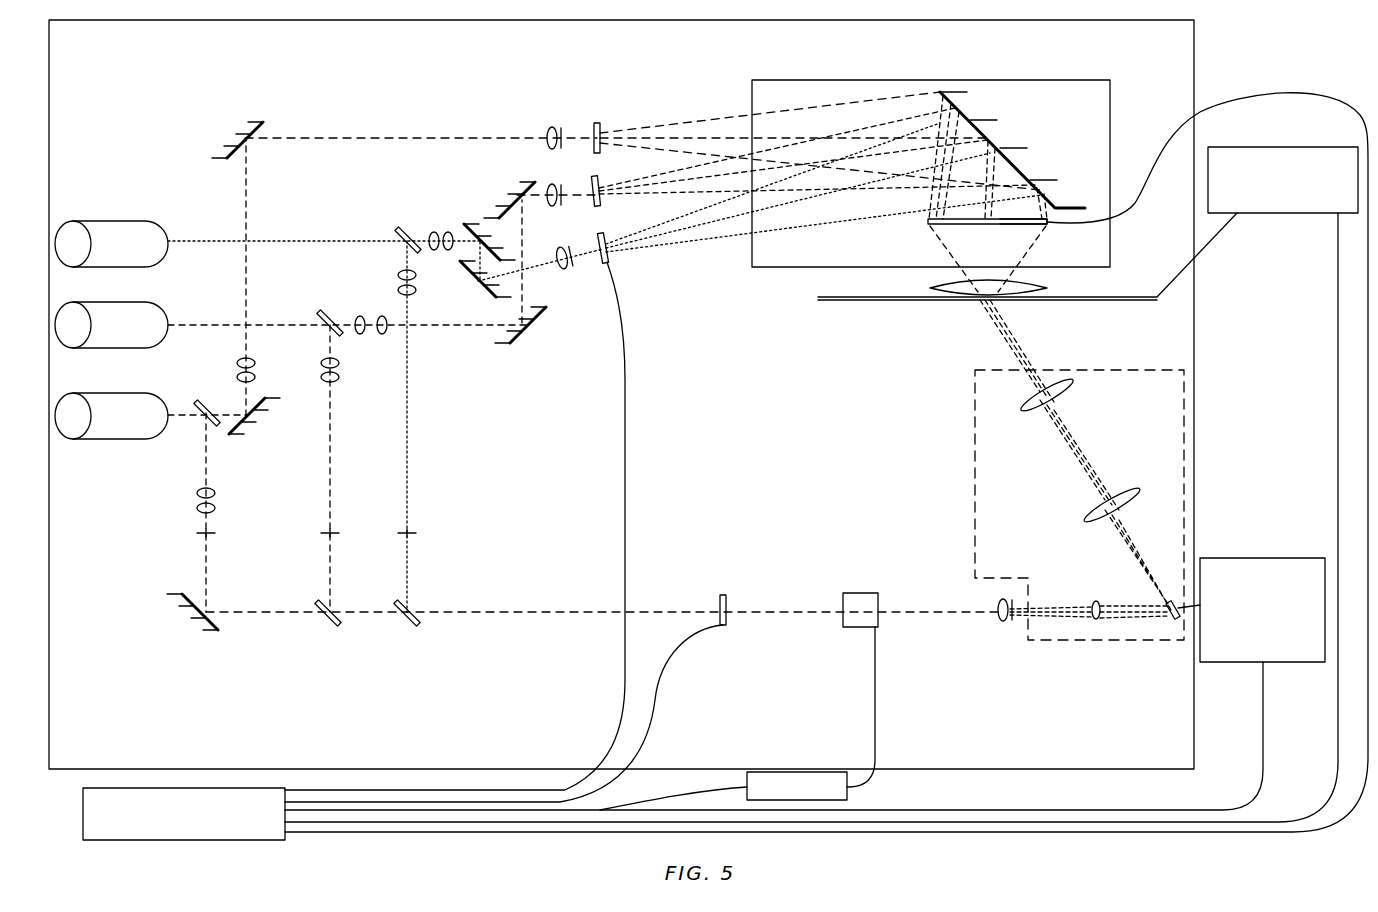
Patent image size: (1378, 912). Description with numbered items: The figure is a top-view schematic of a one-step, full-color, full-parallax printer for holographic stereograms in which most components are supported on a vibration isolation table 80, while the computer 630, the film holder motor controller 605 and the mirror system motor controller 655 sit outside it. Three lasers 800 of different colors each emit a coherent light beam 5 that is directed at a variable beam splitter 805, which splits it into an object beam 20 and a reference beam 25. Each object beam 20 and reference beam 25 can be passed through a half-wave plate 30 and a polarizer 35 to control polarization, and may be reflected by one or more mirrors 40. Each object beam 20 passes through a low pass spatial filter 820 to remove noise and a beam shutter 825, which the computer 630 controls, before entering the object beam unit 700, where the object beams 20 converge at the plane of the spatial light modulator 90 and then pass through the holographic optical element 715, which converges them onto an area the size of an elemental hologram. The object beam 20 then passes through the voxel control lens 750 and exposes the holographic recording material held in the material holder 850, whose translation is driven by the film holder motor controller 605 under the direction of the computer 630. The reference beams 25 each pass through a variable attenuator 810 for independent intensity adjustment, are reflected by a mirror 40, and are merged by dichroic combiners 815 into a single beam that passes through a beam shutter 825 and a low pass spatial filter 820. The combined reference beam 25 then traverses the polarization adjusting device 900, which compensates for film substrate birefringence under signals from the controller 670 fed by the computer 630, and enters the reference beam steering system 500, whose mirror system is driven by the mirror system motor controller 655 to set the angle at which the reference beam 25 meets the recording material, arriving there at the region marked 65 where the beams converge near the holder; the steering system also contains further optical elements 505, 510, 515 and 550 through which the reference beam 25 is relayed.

The coherent light beam 5 is at (226, 250).
The object beam 20 is at (410, 133).
The reference beam 25 is at (575, 618).
The half-wave plate 30 is at (430, 228).
The polarizer 35 is at (447, 228).
The mirror 40 is at (238, 128).
The focal point on sample 65 is at (975, 305).
The vibration isolation table 80 is at (1198, 58).
The spatial light modulator 90 is at (1052, 228).
The reference beam steering system 500 is at (972, 478).
The lens 505 is at (1061, 405).
The lens 510 is at (1128, 493).
The lens 515 is at (1094, 598).
The detector 550 is at (1172, 622).
The film holder motor controller 605 is at (1264, 193).
The computer 630 is at (165, 827).
The mirror system motor controller 655 is at (1243, 622).
The controller 670 is at (780, 798).
The object beam unit 700 is at (933, 77).
The holographic optical element 715 is at (938, 228).
The voxel control lens 750 is at (926, 288).
The laser 800 is at (101, 256).
The variable beam splitter 805 is at (398, 232).
The variable attenuator 810 is at (200, 540).
The dichroic combiner 815 is at (326, 624).
The low pass spatial filter 820 is at (548, 128).
The beam shutter 825 is at (602, 180).
The material holder 850 is at (1103, 304).
The polarization adjusting device 900 is at (868, 590).